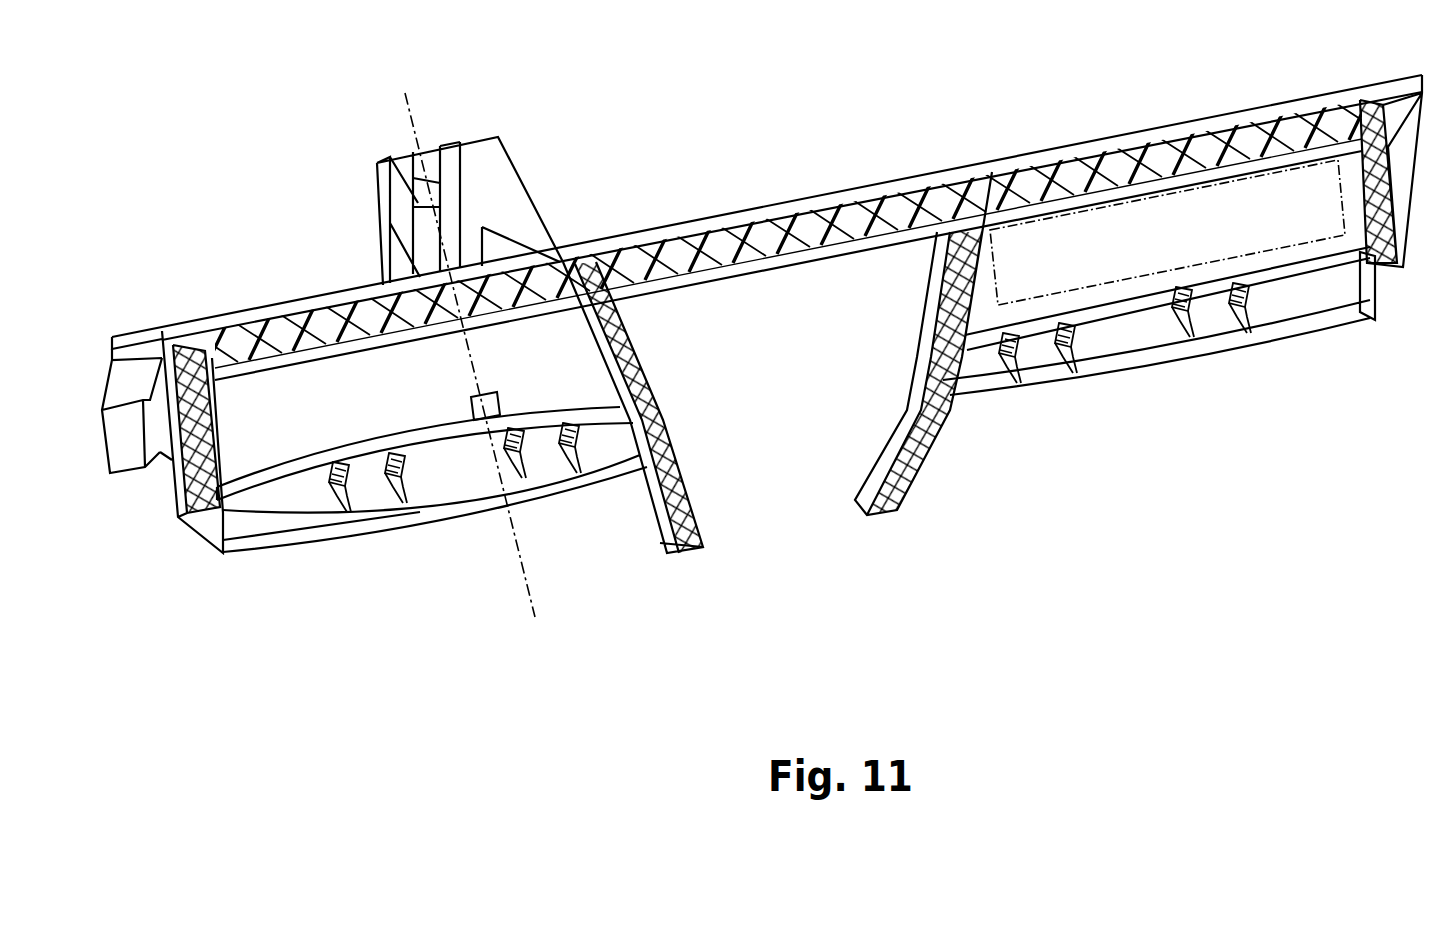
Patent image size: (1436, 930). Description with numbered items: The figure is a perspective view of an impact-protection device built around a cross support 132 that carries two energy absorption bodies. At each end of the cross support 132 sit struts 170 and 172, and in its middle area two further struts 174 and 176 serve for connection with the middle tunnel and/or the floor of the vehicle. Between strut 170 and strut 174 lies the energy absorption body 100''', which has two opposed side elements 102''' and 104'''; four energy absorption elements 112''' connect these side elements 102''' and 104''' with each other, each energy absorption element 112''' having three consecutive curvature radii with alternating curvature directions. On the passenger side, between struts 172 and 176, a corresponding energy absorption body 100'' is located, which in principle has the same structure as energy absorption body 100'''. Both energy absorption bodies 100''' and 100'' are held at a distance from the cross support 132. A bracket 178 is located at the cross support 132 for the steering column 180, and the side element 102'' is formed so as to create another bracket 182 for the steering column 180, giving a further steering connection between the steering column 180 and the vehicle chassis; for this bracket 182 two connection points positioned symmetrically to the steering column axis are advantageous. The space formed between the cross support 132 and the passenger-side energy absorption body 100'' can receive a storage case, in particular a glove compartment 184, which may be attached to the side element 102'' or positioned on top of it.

The cross support 132 is at (940, 177).
The bracket 178 is at (521, 171).
The steering column 180 is at (410, 118).
The bracket 182 is at (478, 398).
The glove compartment 184 is at (1113, 227).
The strut 170 is at (198, 513).
The strut 174 is at (688, 558).
The strut 176 is at (880, 514).
The strut 172 is at (1389, 272).
The energy absorption body 100''' is at (432, 492).
The side element 102''' is at (425, 451).
The side element 104''' is at (435, 536).
The energy absorption elements 112''' is at (477, 460).
The energy absorption body 100'' is at (1159, 343).
The side element 102'' is at (1167, 277).